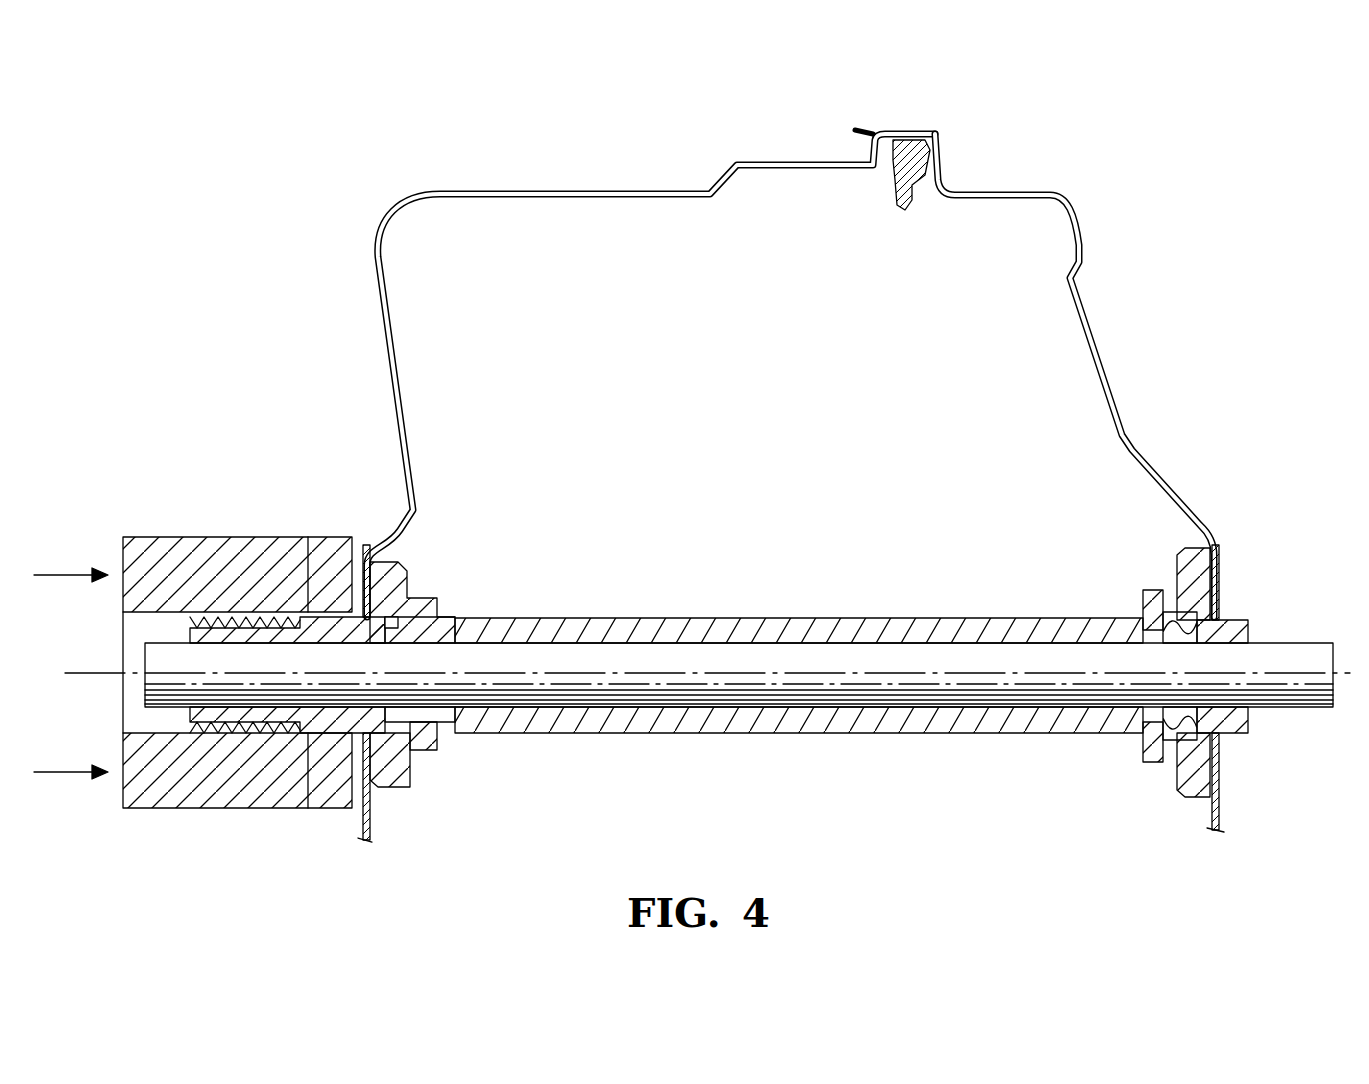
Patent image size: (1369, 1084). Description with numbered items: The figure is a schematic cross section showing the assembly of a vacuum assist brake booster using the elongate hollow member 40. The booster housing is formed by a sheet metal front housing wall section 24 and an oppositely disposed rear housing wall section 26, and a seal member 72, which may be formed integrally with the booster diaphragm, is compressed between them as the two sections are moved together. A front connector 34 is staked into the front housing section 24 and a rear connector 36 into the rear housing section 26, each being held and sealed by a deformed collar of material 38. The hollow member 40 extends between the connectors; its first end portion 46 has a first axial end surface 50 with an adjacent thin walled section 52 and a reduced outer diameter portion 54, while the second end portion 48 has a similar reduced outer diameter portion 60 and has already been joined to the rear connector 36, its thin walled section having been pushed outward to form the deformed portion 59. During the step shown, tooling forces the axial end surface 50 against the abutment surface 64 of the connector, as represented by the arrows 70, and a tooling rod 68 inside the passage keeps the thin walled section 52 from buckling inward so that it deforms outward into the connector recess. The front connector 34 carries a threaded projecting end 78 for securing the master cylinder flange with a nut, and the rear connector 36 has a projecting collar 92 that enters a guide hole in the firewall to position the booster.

The front housing wall section 24 is at (396, 369).
The rear housing wall section 26 is at (1105, 358).
The front connector 34 is at (393, 565).
The rear connector 36 is at (1183, 545).
The collar of material 38 is at (365, 605).
The elongate hollow member 40 is at (728, 618).
The first end portion 46 is at (455, 612).
The second end portion 48 is at (1138, 742).
The first axial end surface 50 is at (383, 610).
The thin walled section 52 is at (418, 765).
The reduced outer diameter portion 54 is at (415, 740).
The deformed portion 59 is at (1178, 728).
The reduced outer diameter portion 60 is at (207, 543).
The abutment surface 64 is at (405, 762).
The tooling rod 68 is at (540, 690).
The arrows 70 is at (72, 575).
The seal member 72 is at (923, 140).
The threaded projecting end 78 is at (222, 722).
The projecting collar 92 is at (1250, 722).